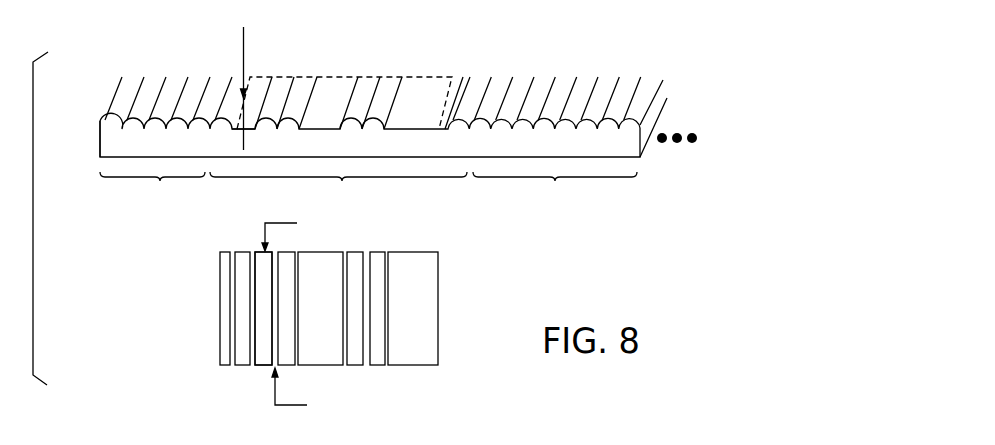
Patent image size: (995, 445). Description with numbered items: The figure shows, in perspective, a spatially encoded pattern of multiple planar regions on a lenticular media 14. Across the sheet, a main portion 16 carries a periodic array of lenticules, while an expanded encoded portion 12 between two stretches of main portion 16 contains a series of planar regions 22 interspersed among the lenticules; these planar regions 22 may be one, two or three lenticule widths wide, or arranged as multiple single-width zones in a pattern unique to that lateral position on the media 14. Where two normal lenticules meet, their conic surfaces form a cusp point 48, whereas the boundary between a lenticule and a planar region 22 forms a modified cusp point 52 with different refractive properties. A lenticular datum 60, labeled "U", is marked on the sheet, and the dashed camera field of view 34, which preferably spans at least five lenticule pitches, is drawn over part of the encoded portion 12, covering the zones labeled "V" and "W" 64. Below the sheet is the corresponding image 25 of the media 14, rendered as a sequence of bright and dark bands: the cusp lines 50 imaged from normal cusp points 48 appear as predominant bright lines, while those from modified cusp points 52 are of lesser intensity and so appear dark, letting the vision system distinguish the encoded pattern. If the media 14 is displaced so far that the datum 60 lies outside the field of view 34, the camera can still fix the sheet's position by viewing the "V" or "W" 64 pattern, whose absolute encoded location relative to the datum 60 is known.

The encoded portion 12 is at (338, 191).
The lenticular media 14 is at (627, 147).
The main portion 16 is at (368, 192).
The planar region 22 is at (250, 97).
The image 25 is at (438, 302).
The camera field of view 34 is at (375, 75).
The cusp point 48 is at (143, 130).
The cusp line 50 is at (258, 252).
The modified cusp point 52 is at (233, 129).
The lenticular datum 60 is at (243, 53).
The "W" pattern 64 is at (346, 147).